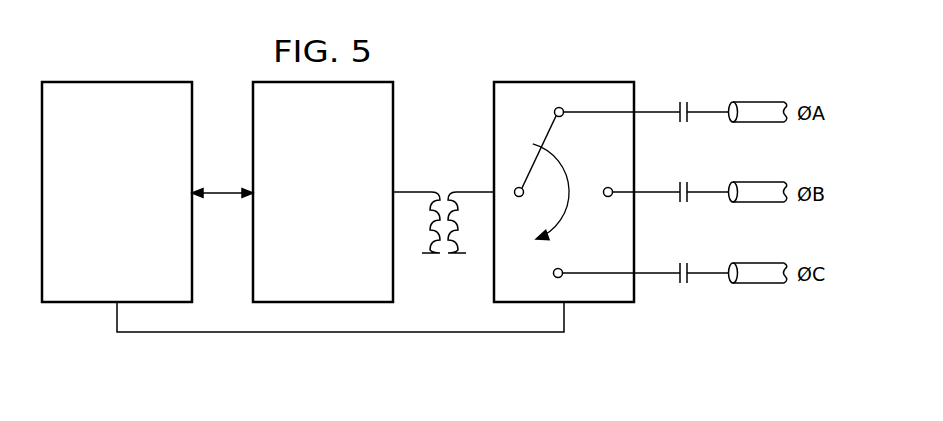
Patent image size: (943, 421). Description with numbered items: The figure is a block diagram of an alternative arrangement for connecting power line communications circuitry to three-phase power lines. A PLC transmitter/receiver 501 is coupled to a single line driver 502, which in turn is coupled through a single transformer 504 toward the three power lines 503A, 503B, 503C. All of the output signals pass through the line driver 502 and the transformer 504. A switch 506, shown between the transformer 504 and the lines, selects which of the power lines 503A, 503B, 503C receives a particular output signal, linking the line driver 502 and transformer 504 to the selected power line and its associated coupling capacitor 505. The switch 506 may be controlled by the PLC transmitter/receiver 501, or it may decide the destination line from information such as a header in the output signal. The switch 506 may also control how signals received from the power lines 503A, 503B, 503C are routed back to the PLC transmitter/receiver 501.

The PLC transmitter/receiver 501 is at (97, 250).
The line driver 502 is at (343, 223).
The transformer 504 is at (443, 193).
The coupling capacitor 505 is at (684, 100).
The switch 506 is at (575, 82).
The power line 503A is at (757, 101).
The power line 503B is at (757, 181).
The power line 503C is at (757, 284).